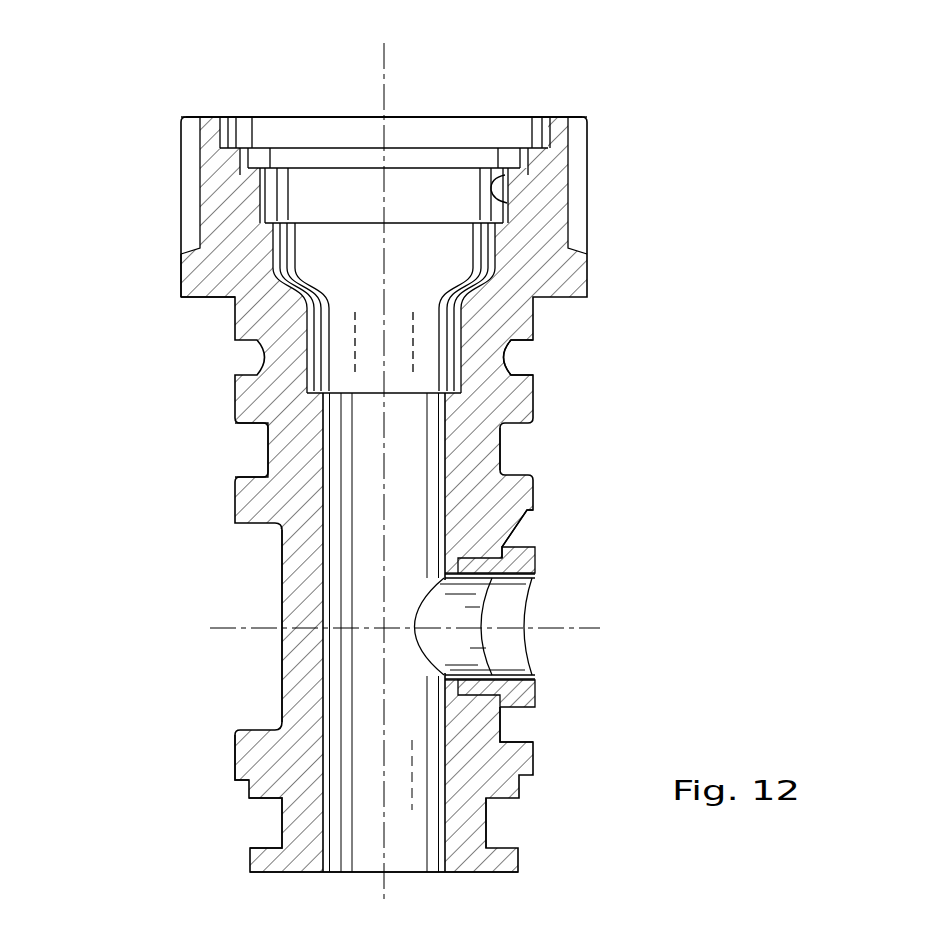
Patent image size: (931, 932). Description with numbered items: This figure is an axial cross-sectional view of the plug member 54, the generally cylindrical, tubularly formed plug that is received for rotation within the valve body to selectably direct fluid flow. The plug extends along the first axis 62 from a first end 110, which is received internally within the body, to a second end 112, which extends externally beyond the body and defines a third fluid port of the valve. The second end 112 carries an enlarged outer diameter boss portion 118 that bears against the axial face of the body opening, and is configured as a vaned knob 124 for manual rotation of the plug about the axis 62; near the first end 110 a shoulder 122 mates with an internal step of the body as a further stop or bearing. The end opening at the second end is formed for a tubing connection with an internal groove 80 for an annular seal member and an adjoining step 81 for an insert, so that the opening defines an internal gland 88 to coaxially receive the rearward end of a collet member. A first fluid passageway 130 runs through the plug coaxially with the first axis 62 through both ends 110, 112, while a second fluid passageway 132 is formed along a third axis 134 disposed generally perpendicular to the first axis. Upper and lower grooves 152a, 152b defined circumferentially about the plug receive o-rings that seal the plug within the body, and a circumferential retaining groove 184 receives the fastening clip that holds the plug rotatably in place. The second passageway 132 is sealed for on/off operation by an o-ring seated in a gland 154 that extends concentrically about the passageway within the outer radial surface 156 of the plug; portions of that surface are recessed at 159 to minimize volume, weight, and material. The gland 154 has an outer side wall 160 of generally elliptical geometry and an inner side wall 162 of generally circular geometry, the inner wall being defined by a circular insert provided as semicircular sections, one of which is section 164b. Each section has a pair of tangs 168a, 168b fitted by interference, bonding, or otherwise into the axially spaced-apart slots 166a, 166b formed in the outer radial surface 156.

The plug member 54 is at (741, 77).
The first axis 62 is at (385, 58).
The internal groove 80 is at (487, 244).
The step 81 is at (507, 203).
The internal gland 88 is at (448, 208).
The first end 110 is at (520, 863).
The second end 112 is at (557, 117).
The boss portion 118 is at (181, 292).
The shoulder 122 is at (245, 781).
The vaned knob 124 is at (181, 189).
The first fluid passageway 130 is at (385, 458).
The second fluid passageway 132 is at (472, 655).
The third axis 134 is at (590, 628).
The upper groove 152a is at (237, 430).
The lower groove 152b is at (263, 800).
The annular groove or gland 154 is at (554, 637).
The outer radial surface 156 is at (535, 502).
The recess 159 is at (282, 558).
The outer side wall 160 is at (510, 738).
The inner side wall 162 is at (513, 723).
The semicircular section 164b is at (537, 565).
The slot 166a is at (473, 557).
The slot 166b is at (483, 700).
The tang 168a is at (457, 566).
The tang 168b is at (457, 688).
The retaining groove 184 is at (508, 351).